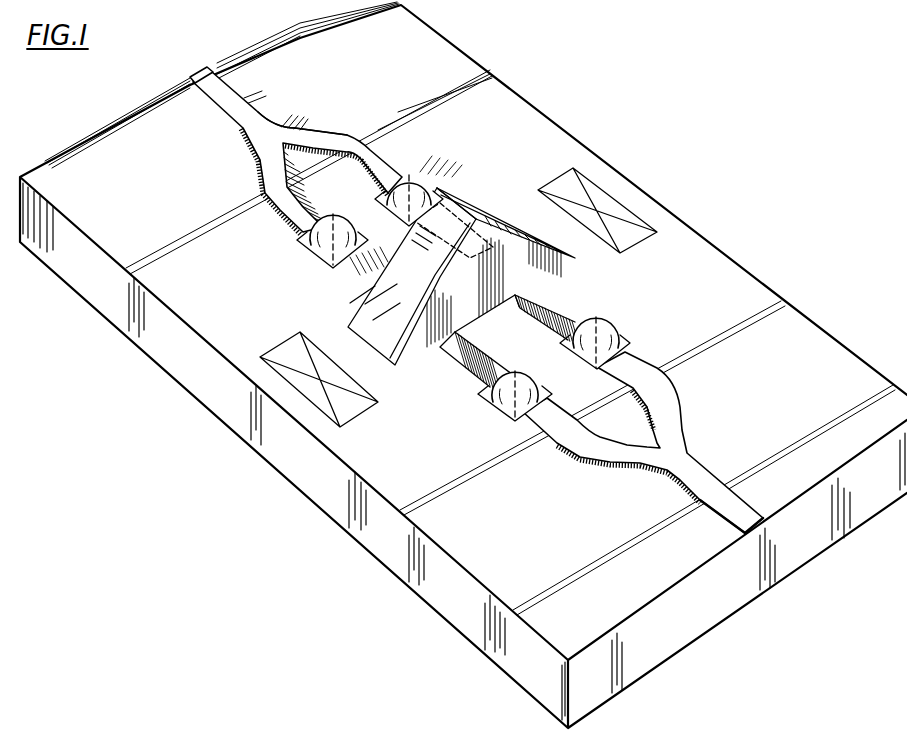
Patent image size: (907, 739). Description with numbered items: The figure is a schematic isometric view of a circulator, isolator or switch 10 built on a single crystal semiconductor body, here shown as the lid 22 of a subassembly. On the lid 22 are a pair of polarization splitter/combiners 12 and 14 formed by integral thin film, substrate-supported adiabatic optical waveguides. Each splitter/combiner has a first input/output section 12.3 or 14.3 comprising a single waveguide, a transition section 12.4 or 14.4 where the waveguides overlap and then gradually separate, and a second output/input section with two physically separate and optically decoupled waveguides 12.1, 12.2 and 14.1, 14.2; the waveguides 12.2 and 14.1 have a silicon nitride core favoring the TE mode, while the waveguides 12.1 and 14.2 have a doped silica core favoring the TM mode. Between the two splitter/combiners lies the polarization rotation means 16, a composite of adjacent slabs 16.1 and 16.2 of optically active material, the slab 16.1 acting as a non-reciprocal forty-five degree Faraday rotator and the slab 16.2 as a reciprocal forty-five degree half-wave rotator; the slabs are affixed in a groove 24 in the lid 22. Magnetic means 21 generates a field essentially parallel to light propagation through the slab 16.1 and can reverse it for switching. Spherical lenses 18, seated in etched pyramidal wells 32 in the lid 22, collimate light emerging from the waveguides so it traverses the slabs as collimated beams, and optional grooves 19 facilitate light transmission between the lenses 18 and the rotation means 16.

The circulator, isolator or switch 10 is at (50, 386).
The polarization splitter/combiner 12 is at (299, 157).
The second (output/input) section waveguide 12.1 is at (373, 157).
The second (output/input) section waveguide 12.2 is at (297, 230).
The first (input/output) section 12.3 is at (207, 96).
The transition section 12.4 is at (258, 112).
The polarization splitter/combiner 14 is at (648, 452).
The second (output/input) section waveguide 14.1 is at (633, 367).
The second (output/input) section waveguide 14.2 is at (553, 440).
The first (input/output) section 14.3 is at (720, 516).
The transition section 14.4 is at (682, 477).
The polarization rotation means 16 is at (433, 285).
The non-reciprocal 45° rotator slab 16.1 is at (402, 255).
The reciprocal 45° rotator slab 16.2 is at (413, 335).
The spherical lenses 18 is at (428, 190).
The grooves 19 is at (462, 201).
The magnetic means 21 is at (612, 205).
The lid 22 is at (292, 456).
The groove 24 is at (567, 266).
The etched wells 32 is at (365, 238).